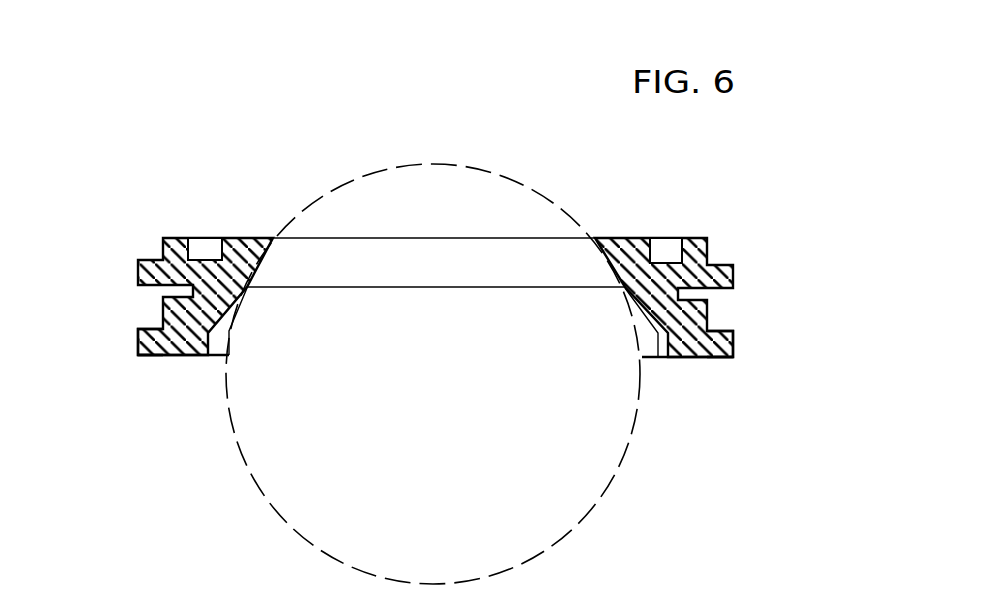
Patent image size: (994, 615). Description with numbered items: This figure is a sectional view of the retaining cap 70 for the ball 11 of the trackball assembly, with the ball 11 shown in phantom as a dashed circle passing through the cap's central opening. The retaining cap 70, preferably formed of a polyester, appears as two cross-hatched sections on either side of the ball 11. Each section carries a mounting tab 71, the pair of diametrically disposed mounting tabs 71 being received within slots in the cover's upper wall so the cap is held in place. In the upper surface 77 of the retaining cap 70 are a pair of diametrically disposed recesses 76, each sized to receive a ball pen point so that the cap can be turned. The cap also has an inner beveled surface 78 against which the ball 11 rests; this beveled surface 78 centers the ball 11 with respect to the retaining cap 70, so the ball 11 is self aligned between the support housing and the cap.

The ball 11 is at (636, 428).
The retaining cap 70 is at (718, 247).
The mounting tabs 71 is at (137, 343).
The recesses 76 is at (221, 246).
The upper surface 77 is at (237, 238).
The inner beveled surface 78 is at (276, 247).